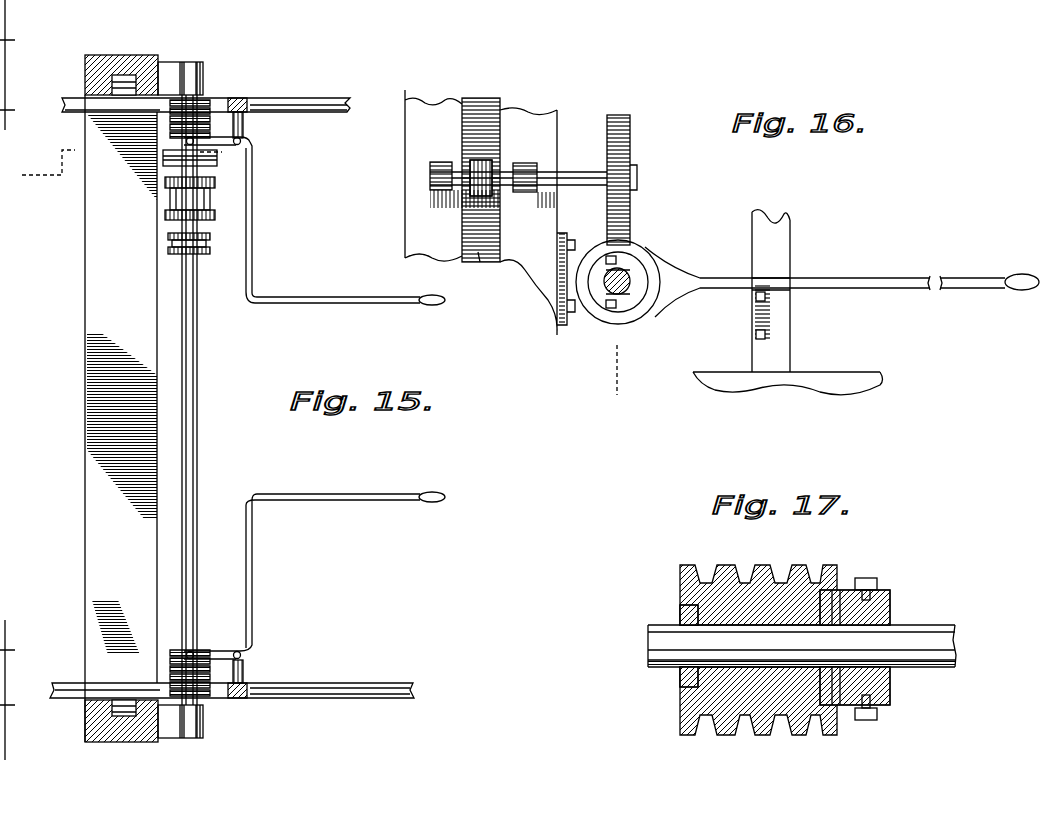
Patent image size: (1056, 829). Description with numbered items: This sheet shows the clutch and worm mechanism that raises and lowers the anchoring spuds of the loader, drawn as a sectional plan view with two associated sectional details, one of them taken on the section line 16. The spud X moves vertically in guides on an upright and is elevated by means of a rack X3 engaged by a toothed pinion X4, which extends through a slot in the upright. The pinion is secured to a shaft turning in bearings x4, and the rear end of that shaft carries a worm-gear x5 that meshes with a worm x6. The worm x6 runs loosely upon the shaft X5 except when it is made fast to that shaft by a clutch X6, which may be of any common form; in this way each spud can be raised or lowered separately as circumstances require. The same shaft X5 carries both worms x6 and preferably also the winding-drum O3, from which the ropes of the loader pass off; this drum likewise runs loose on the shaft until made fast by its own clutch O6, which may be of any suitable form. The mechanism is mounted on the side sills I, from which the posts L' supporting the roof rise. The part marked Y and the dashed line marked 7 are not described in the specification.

In FIG. 15, the spud X is at (85, 60).
In FIG. 16, the spud X is at (481, 203).
In FIG. 15, the rack X3 is at (85, 712).
In FIG. 16, the rack X3 is at (479, 255).
In FIG. 16, the toothed pinion X4 is at (466, 200).
In FIG. 15, the shaft X5 is at (200, 326).
In FIG. 16, the shaft X5 is at (628, 272).
In FIG. 17, the shaft X5 is at (648, 641).
In FIG. 15, the clutch X6 is at (294, 656).
In FIG. 16, the clutch X6 is at (603, 302).
In FIG. 17, the clutch X6 is at (886, 596).
In FIG. 16, the bearings x4 is at (572, 130).
In FIG. 16, the worm-gear x5 is at (633, 152).
In FIG. 15, the worm x6 is at (206, 100).
In FIG. 16, the worm x6 is at (636, 245).
In FIG. 17, the worm x6 is at (768, 560).
In FIG. 15, the posts L' is at (251, 401).
In FIG. 16, the posts L' is at (786, 291).
In FIG. 15, the side sills I is at (333, 100).
In FIG. 16, the side sills I is at (840, 372).
In FIG. 15, the pulley Y is at (218, 158).
In FIG. 15, the winding-drum O3 is at (214, 200).
In FIG. 15, the clutch O6 is at (212, 246).
In FIG. 15, the section line 16 is at (128, 167).
In FIG. 16, the dashed reference line 7 is at (617, 380).